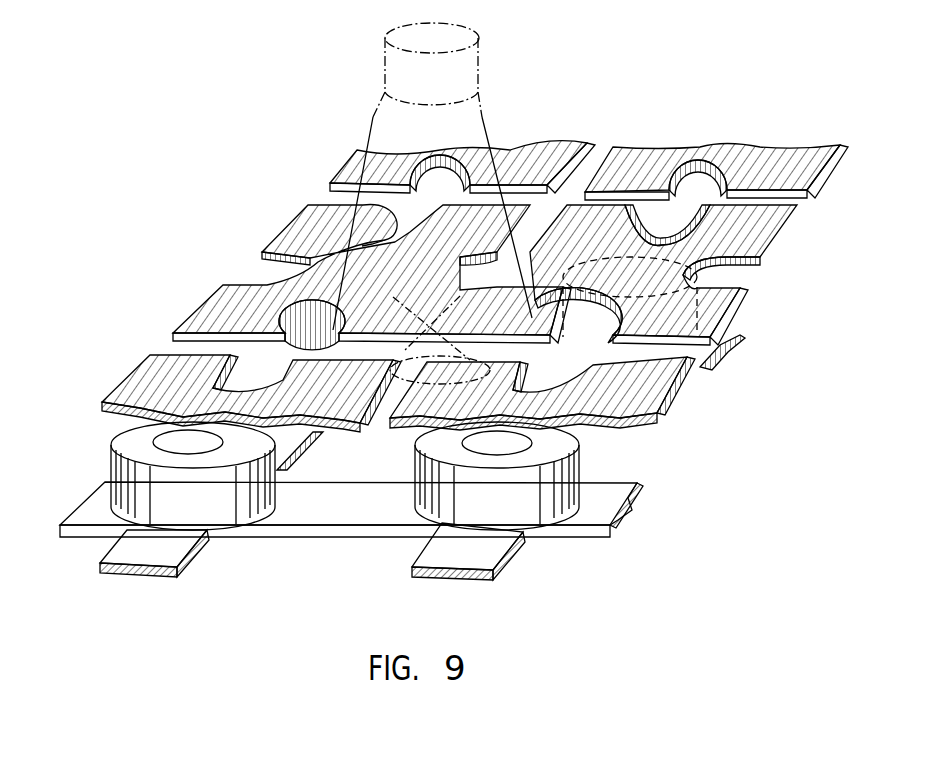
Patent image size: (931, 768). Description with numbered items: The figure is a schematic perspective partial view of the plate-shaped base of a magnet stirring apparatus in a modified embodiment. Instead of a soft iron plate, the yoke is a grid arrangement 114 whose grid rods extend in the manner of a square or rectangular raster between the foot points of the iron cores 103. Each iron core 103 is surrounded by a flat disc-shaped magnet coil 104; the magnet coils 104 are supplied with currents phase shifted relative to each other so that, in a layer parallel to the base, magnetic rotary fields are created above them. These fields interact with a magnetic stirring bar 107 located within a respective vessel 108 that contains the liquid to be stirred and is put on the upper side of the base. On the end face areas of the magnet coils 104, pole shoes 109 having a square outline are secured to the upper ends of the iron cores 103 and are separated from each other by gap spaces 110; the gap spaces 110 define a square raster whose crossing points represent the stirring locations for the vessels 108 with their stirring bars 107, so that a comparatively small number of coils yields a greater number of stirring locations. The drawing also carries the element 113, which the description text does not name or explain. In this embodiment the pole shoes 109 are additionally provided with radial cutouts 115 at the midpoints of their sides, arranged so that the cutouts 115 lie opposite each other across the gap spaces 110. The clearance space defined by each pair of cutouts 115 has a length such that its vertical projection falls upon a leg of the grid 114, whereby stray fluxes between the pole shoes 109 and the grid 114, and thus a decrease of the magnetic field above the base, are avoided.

The iron core 103 is at (160, 447).
The magnet coil 104 is at (228, 497).
The magnetic stirring bar 107 is at (447, 333).
The vessel 108 is at (468, 124).
The pole shoe 109 is at (660, 397).
The gap space 110 is at (772, 200).
The intermediate puzzle-shaped sheet 113 is at (485, 277).
The grid arrangement 114 is at (637, 520).
The cutout 115 is at (692, 182).